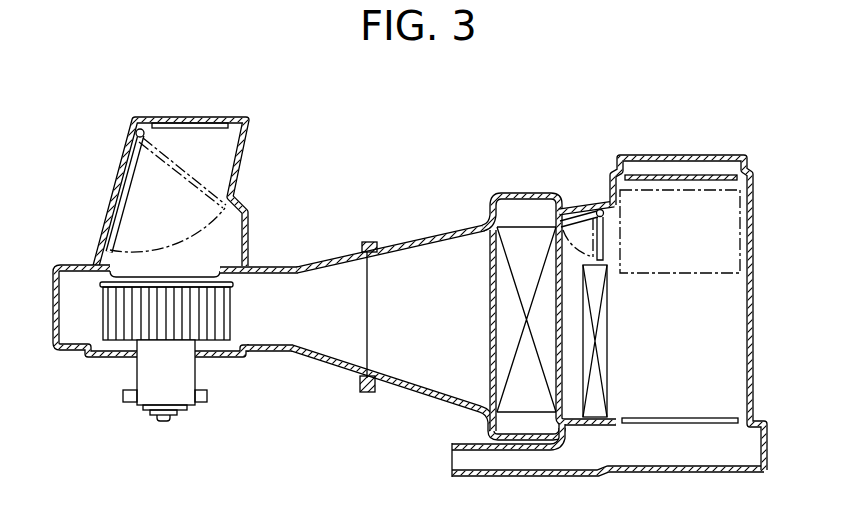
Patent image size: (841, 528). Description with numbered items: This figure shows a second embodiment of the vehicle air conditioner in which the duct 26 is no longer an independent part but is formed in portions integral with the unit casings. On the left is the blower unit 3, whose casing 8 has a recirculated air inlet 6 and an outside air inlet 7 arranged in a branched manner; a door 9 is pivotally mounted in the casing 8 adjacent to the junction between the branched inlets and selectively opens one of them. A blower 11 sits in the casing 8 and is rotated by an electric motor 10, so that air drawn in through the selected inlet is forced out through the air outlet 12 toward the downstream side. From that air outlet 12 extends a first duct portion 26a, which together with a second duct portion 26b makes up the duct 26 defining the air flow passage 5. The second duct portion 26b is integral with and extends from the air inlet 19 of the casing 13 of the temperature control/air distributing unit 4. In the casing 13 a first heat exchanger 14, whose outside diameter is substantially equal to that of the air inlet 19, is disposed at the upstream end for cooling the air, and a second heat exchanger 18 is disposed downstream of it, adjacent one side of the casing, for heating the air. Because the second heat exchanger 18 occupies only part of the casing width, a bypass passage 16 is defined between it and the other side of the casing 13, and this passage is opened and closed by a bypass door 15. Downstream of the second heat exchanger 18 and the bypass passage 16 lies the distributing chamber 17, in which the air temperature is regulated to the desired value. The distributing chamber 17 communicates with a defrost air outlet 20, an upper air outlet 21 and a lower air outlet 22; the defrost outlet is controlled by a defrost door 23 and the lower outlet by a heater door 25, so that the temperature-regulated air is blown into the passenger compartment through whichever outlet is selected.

The blower unit 3 is at (70, 258).
The temperature control/air distributing unit 4 is at (522, 189).
The air flow passage 5 is at (397, 355).
The recirculated air inlet 6 is at (126, 187).
The outside air inlet 7 is at (197, 118).
The casing 8 is at (56, 330).
The door 9 is at (130, 167).
The electric motor 10 is at (183, 390).
The blower 11 is at (123, 330).
The air outlet 12 is at (272, 293).
The casing 13 is at (478, 428).
The first heat exchanger 14 is at (537, 405).
The bypass door 15 is at (573, 206).
The bypass passage 16 is at (588, 233).
The distributing chamber 17 is at (723, 368).
The second heat exchanger 18 is at (595, 410).
The air inlet 19 is at (458, 263).
The defrost air outlet 20 is at (713, 160).
The upper air outlet 21 is at (735, 260).
The lower air outlet 22 is at (480, 462).
The defrost door 23 is at (646, 173).
The heater door 25 is at (677, 425).
The duct 26 is at (318, 367).
The first duct portion 26a is at (330, 258).
The second duct portion 26b is at (400, 242).